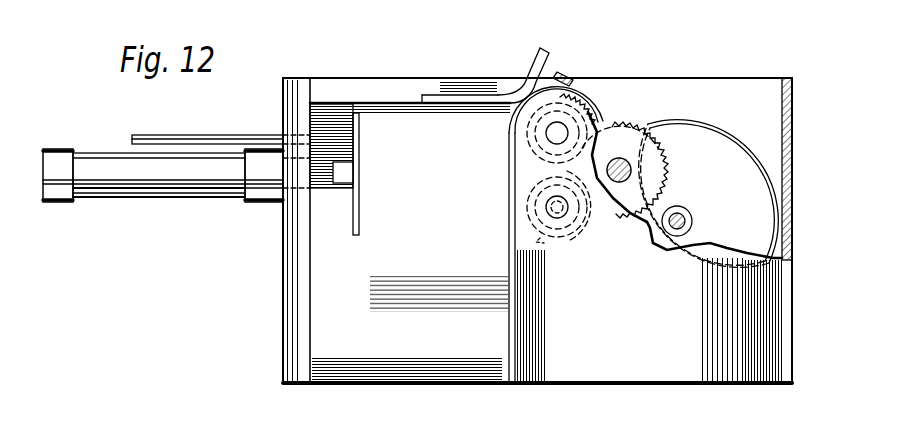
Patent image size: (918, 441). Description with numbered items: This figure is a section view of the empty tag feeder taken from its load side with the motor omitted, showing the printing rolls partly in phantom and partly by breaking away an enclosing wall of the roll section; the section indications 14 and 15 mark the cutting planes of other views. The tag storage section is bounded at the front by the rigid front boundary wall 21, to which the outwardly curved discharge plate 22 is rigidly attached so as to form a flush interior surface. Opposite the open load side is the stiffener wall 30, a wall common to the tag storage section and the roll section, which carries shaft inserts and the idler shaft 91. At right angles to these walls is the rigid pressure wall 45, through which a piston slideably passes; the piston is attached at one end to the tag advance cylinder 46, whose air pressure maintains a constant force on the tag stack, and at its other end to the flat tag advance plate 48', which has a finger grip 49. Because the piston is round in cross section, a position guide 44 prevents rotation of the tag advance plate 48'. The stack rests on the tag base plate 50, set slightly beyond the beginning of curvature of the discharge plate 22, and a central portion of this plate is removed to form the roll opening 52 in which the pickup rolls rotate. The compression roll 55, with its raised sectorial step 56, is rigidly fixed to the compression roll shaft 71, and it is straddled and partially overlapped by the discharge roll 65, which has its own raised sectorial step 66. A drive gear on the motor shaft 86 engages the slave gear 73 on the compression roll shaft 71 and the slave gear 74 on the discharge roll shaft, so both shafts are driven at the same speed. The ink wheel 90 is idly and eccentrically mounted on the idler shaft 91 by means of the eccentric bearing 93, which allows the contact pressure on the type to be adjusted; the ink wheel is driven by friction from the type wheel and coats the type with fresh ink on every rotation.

The section line 14- 14 is at (557, 263).
The section line 15- 15 is at (576, 52).
The front boundary wall 21 is at (388, 92).
The discharge plate 22 is at (528, 68).
The stiffener wall 30 is at (421, 260).
The position guide 44 is at (190, 136).
The pressure wall 45 is at (290, 285).
The tag advance cylinder 46 is at (89, 160).
The tag advance plate 48' is at (348, 142).
The finger grip 49 is at (354, 170).
The tag base plate 50 is at (517, 384).
The roll opening 52 is at (553, 92).
The compression roll 55 is at (538, 245).
The raised sectorial step 56 is at (513, 197).
The discharge roll 65 is at (623, 117).
The raised sectorial step 66 is at (505, 118).
The compression roll shaft 71 is at (511, 242).
The slave gear 73 is at (520, 177).
The slave gear 74 is at (575, 110).
The motor shaft 86 is at (632, 168).
The ink wheel 90 is at (730, 145).
The idler shaft 91 is at (690, 214).
The eccentric bearing 93 is at (692, 224).